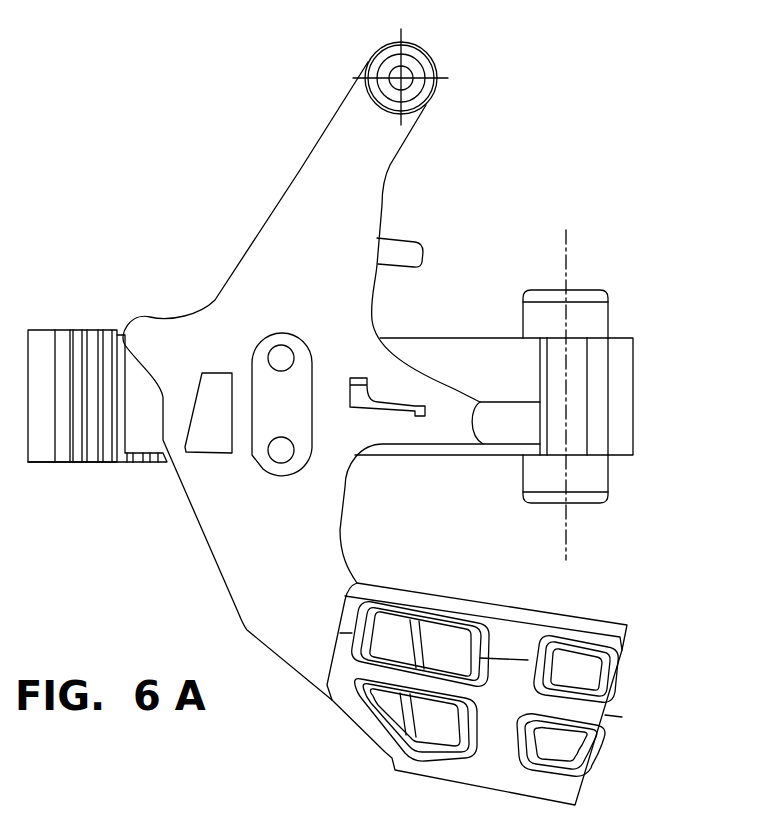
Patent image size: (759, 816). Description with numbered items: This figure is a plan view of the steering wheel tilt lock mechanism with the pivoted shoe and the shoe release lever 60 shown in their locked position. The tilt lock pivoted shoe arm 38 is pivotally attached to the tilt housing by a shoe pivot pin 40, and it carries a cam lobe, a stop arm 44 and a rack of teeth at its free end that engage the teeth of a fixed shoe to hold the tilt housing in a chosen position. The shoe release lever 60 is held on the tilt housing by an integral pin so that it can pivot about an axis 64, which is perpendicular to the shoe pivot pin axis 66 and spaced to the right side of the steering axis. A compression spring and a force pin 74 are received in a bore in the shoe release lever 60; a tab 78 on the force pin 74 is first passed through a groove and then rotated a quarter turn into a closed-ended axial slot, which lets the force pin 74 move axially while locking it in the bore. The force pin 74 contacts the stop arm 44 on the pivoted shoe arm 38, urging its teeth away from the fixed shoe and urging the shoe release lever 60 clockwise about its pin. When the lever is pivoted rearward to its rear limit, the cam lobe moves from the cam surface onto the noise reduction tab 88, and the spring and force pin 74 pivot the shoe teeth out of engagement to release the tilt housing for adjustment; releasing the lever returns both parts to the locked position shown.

The shoe release lever 60 is at (270, 215).
The axis 64 is at (401, 78).
The noise reduction tab 88 is at (155, 333).
The tab 78 is at (422, 408).
The tilt lock pivoted shoe arm 38 is at (633, 362).
The stop arm 44 is at (537, 370).
The shoe pivot pin 40 is at (608, 470).
The force pin 74 is at (517, 432).
The shoe pivot pin axis 66 is at (566, 252).